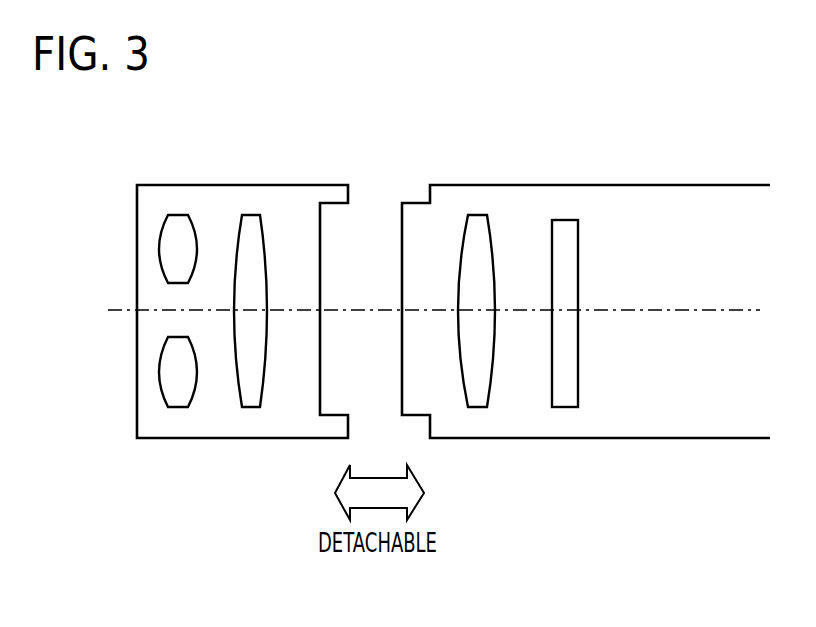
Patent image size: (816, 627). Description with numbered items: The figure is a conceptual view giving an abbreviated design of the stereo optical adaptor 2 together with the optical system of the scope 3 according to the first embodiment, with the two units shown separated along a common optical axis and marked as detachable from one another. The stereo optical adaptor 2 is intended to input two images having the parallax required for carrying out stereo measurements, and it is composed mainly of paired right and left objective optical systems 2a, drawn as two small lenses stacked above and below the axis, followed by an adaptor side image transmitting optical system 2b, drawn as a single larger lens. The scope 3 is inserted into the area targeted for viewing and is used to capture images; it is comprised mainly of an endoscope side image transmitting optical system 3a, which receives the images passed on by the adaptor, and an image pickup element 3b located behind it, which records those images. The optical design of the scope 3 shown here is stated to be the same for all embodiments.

The stereo optical adaptor 2 is at (222, 185).
The paired right and left objective optical systems 2a is at (182, 283).
The adaptor side image transmitting optical system 2b is at (251, 407).
The scope 3 is at (573, 185).
The endoscope side image transmitting optical system 3a is at (477, 407).
The image pickup element 3b is at (563, 407).